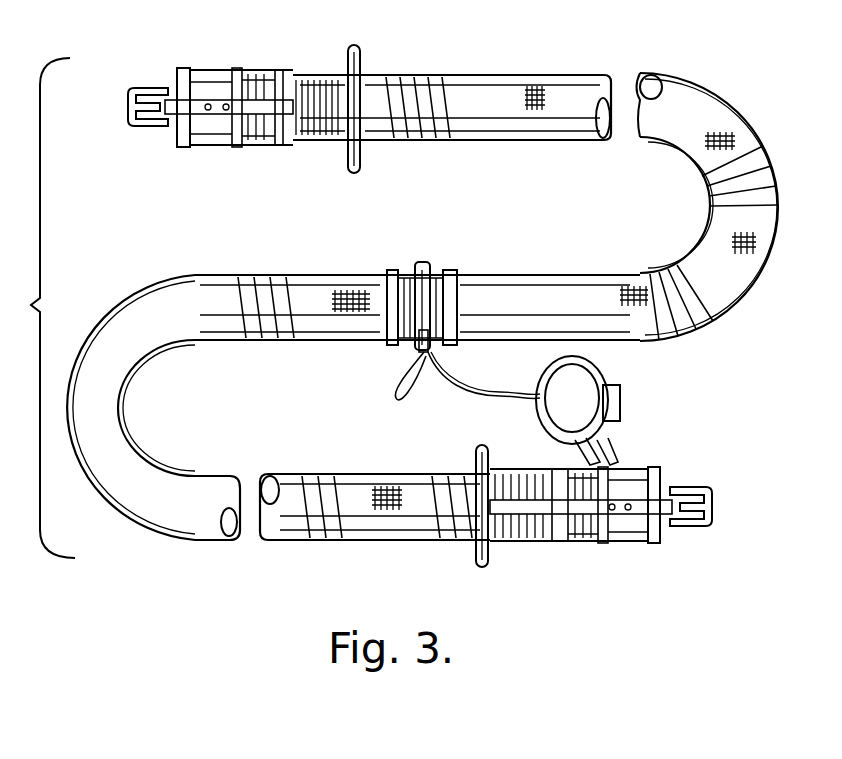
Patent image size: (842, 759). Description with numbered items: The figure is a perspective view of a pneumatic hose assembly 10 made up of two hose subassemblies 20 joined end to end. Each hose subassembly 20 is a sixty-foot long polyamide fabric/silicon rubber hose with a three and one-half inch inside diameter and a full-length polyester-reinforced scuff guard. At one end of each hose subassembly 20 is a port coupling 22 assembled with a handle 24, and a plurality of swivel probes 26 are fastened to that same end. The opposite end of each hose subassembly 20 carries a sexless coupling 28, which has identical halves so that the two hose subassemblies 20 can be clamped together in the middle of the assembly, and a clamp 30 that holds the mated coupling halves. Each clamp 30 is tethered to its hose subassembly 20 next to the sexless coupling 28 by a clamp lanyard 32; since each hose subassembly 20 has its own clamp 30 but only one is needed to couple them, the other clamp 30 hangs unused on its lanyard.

The pneumatic hose assembly 10 is at (41, 308).
The hose subassembly 20 is at (535, 78).
The port coupling 22 is at (212, 70).
The handle 24 is at (362, 50).
The swivel probe 26 is at (130, 87).
The sexless coupling 28 is at (413, 277).
The clamp 30 is at (428, 264).
The clamp lanyard 32 is at (395, 393).